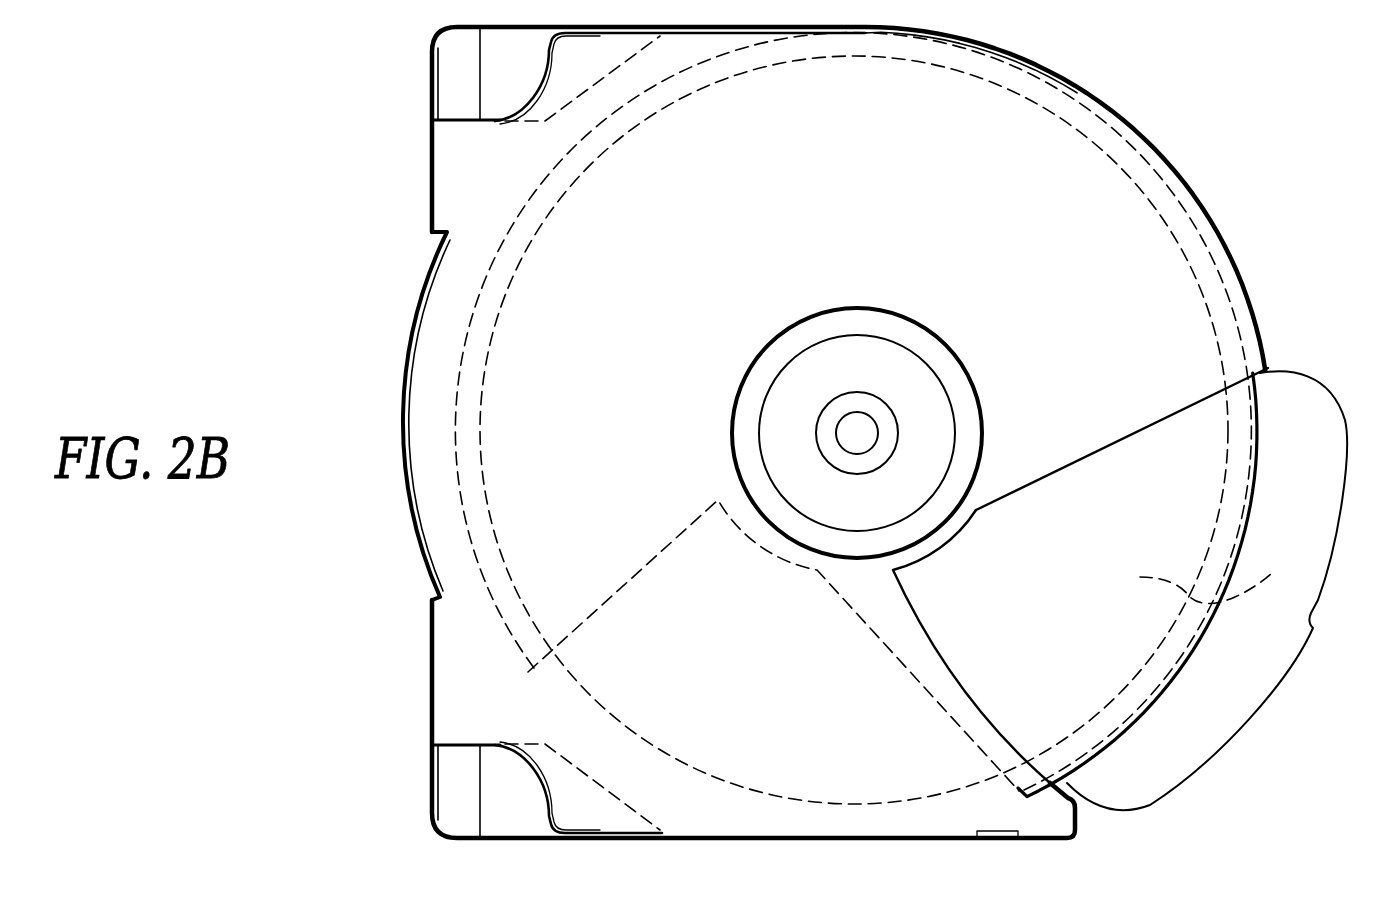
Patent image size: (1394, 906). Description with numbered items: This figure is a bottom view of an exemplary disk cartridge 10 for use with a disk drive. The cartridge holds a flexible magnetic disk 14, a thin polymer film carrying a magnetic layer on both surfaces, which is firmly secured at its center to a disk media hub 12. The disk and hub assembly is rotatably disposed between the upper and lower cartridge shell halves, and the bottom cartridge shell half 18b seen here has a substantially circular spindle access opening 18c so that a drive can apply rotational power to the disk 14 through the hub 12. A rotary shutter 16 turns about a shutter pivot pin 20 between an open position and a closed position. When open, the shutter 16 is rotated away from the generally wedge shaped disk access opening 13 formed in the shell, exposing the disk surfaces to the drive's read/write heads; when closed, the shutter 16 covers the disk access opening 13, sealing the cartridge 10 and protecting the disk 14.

The disk cartridge 10 is at (1282, 73).
The disk media hub 12 is at (775, 360).
The disk access opening 13 is at (1313, 625).
The flexible magnetic disk 14 is at (1218, 570).
The rotary shutter 16 is at (1245, 466).
The bottom cartridge shell half 18b is at (668, 812).
The spindle access opening 18c is at (840, 306).
The shutter pivot pin 20 is at (863, 430).